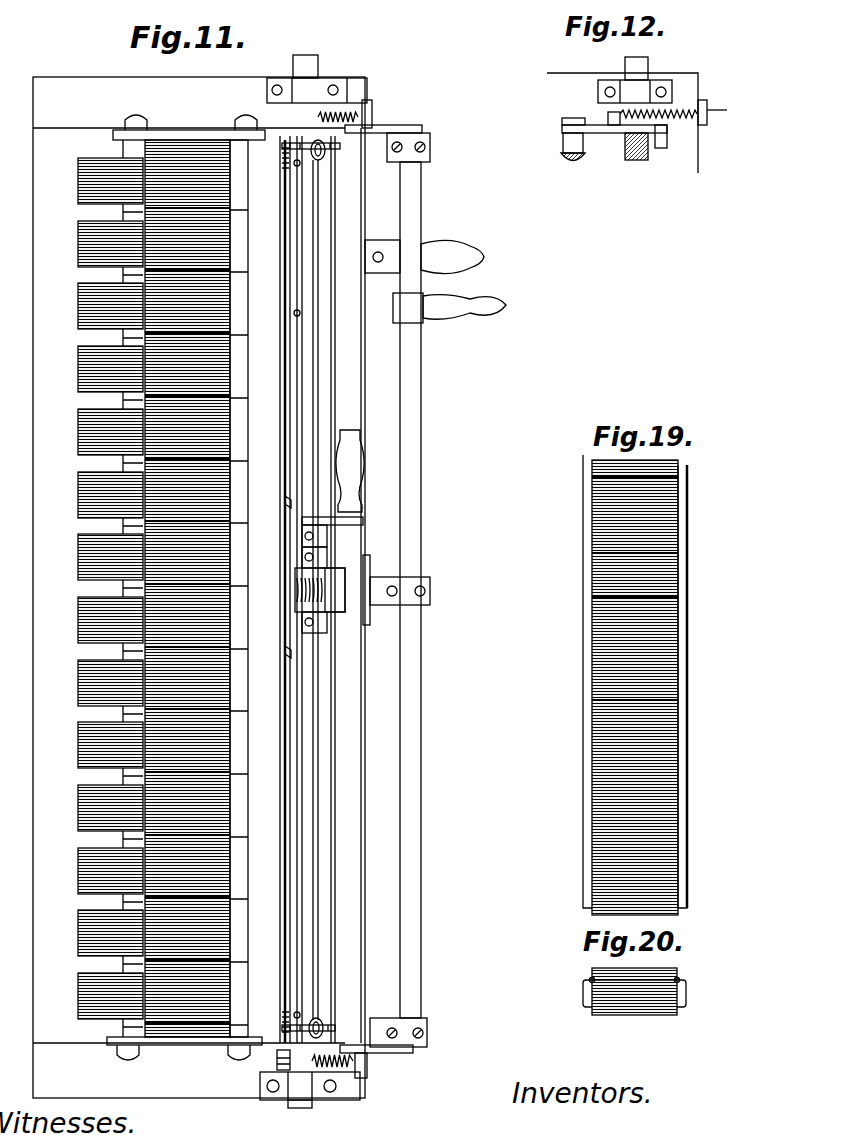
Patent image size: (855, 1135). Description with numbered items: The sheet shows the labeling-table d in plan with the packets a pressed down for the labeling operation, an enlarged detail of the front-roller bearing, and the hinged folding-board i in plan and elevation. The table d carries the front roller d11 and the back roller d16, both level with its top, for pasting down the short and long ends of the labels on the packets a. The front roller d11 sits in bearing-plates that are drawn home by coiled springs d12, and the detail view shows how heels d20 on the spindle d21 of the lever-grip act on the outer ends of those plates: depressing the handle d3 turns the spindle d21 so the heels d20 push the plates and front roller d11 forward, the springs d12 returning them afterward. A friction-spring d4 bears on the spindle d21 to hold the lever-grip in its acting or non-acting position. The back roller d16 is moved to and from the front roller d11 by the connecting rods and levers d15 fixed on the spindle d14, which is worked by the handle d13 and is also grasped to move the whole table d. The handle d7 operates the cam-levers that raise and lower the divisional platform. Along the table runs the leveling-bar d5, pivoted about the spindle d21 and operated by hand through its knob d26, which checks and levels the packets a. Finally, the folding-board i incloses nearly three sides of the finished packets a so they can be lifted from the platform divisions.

In FIG. 11, the labeling-table d is at (199, 587).
In FIG. 12, the labeling-table d is at (622, 123).
In FIG. 11, the handle of the lever-grip d3 is at (355, 456).
In FIG. 11, the friction-spring d4 is at (315, 580).
In FIG. 11, the leveling-bar d5 is at (320, 585).
In FIG. 11, the handle d7 is at (440, 245).
In FIG. 11, the front roller d11 is at (254, 233).
In FIG. 12, the front roller d11 is at (597, 136).
In FIG. 11, the coiled springs d12 is at (372, 1092).
In FIG. 12, the coiled springs d12 is at (682, 112).
In FIG. 11, the handle d13 is at (467, 320).
In FIG. 11, the spindle d14 is at (422, 916).
In FIG. 11, the connecting rods and levers d15 is at (186, 128).
In FIG. 11, the back roller d16 is at (72, 966).
In FIG. 12, the heels d20 is at (667, 138).
In FIG. 11, the spindle of the lever-grip d21 is at (275, 1063).
In FIG. 12, the spindle of the lever-grip d21 is at (637, 160).
In FIG. 11, the hand button or knob d26 is at (315, 160).
In FIG. 11, the packets a is at (187, 588).
In FIG. 19, the packets a is at (635, 687).
In FIG. 20, the packets a is at (634, 991).
In FIG. 19, the hinged folding-board i is at (583, 652).
In FIG. 20, the hinged folding-board i is at (566, 996).